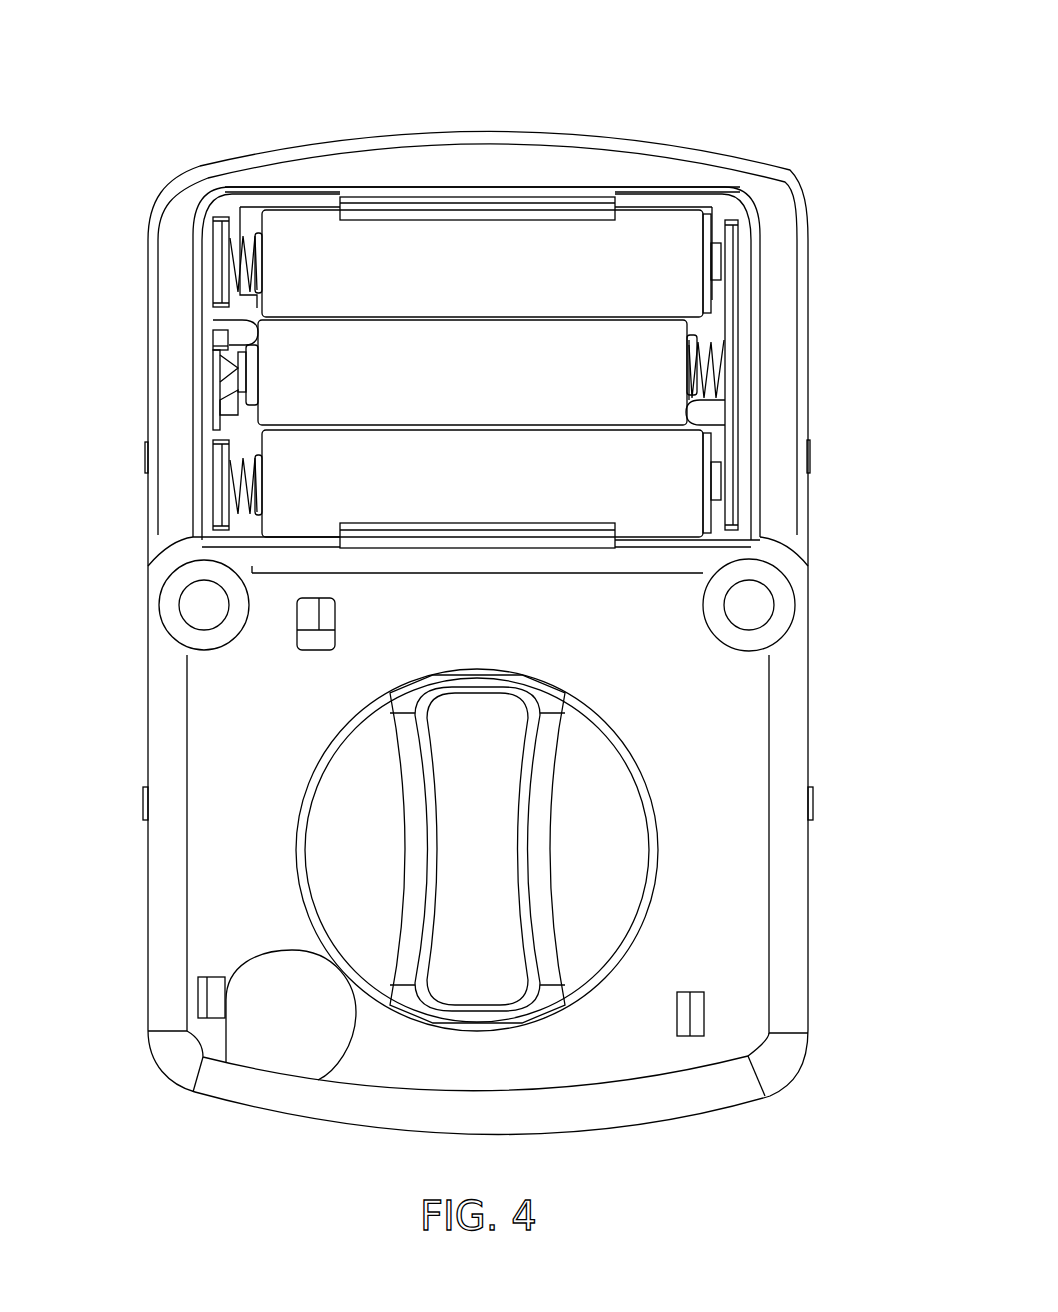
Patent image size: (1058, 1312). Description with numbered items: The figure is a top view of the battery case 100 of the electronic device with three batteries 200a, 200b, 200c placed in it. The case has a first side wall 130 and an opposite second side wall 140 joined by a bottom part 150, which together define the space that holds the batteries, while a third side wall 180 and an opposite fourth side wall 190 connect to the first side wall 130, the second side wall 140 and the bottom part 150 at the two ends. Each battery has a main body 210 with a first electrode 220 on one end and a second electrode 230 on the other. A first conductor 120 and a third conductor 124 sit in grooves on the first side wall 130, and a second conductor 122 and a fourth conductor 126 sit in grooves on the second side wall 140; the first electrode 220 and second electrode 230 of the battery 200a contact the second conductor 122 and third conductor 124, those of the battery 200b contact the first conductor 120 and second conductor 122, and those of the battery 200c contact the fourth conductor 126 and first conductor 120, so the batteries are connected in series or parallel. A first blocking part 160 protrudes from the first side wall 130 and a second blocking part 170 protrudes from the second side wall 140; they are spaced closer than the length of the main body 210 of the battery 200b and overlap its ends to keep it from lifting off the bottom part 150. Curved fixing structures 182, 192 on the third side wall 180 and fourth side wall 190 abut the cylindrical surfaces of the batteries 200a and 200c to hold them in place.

The battery case 100 is at (733, 70).
The first conductor 120 is at (212, 457).
The second conductor 122 is at (738, 320).
The third conductor 124 is at (212, 258).
The fourth conductor 126 is at (737, 507).
The first side wall 130 is at (168, 437).
The second side wall 140 is at (784, 400).
The bottom part 150 is at (237, 410).
The first blocking part 160 is at (242, 328).
The second blocking part 170 is at (706, 413).
The third side wall 180 is at (410, 168).
The fixing structure 182 is at (557, 207).
The fourth side wall 190 is at (450, 586).
The fixing structure 192 is at (555, 540).
The battery 200a is at (720, 214).
The battery 200b is at (710, 334).
The battery 200c is at (716, 544).
The main body 210 is at (480, 367).
The first electrode 220 is at (236, 368).
The second electrode 230 is at (687, 357).